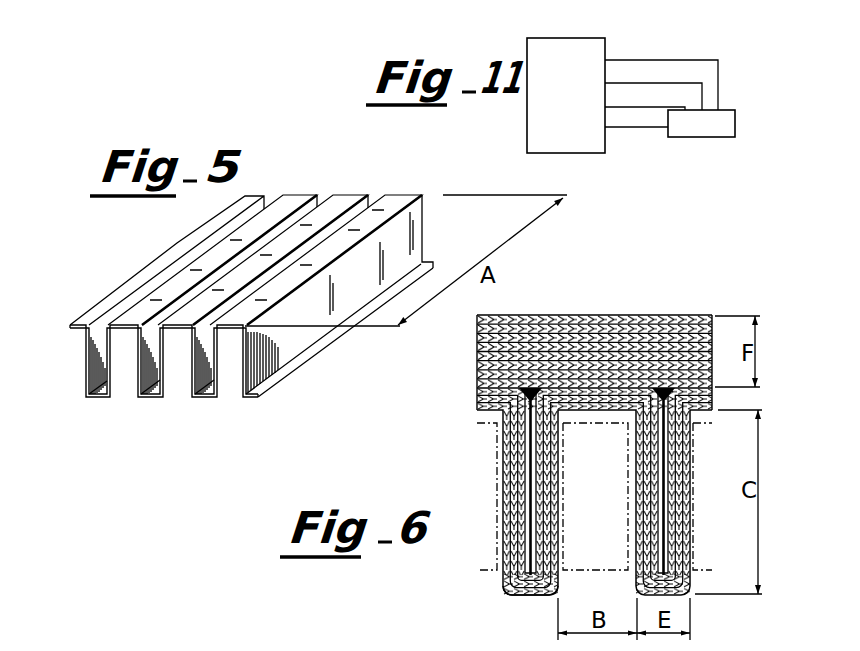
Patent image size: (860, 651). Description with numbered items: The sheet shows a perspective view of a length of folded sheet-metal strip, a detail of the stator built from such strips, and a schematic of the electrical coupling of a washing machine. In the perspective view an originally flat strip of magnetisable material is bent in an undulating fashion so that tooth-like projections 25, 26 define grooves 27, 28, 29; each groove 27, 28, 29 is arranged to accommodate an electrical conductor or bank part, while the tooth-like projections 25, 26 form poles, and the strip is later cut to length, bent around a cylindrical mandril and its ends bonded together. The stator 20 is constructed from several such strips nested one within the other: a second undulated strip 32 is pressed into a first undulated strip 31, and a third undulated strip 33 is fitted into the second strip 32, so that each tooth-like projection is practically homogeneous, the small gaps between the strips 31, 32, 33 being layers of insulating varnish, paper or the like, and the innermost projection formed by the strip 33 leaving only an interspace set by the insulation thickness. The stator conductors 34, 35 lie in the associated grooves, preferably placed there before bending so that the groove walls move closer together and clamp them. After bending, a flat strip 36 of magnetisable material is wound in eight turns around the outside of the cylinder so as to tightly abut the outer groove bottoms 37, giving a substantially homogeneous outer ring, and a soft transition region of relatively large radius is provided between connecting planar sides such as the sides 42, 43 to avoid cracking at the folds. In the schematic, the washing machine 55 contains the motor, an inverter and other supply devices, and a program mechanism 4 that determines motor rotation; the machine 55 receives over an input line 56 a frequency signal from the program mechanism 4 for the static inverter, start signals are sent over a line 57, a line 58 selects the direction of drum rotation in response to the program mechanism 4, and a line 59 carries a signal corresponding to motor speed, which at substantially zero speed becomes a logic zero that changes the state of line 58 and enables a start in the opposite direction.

In FIG. 11, the program mechanism 4 is at (681, 129).
In FIG. 11, the washing machine 55 is at (527, 136).
In FIG. 11, the input line 56 is at (607, 128).
In FIG. 11, the line 57 is at (606, 56).
In FIG. 11, the line 58 is at (605, 68).
In FIG. 11, the line 59 is at (605, 95).
In FIG. 5, the tooth-like projection 25 is at (122, 326).
In FIG. 5, the tooth-like projection 26 is at (176, 326).
In FIG. 5, the groove 27 is at (98, 393).
In FIG. 5, the groove 28 is at (150, 393).
In FIG. 5, the groove 29 is at (206, 393).
In FIG. 6, the stator 20 is at (580, 457).
In FIG. 6, the first undulated strip 31 is at (513, 548).
In FIG. 6, the second undulated strip 32 is at (522, 500).
In FIG. 6, the third undulated strip 33 is at (524, 523).
In FIG. 6, the stator conductor 34 is at (513, 453).
In FIG. 6, the planar side 43 is at (520, 472).
In FIG. 6, the stator conductor 35 is at (704, 452).
In FIG. 6, the flat strip 36 is at (664, 392).
In FIG. 6, the outer groove bottom 37 is at (621, 392).
In FIG. 6, the planar side 42 is at (527, 596).